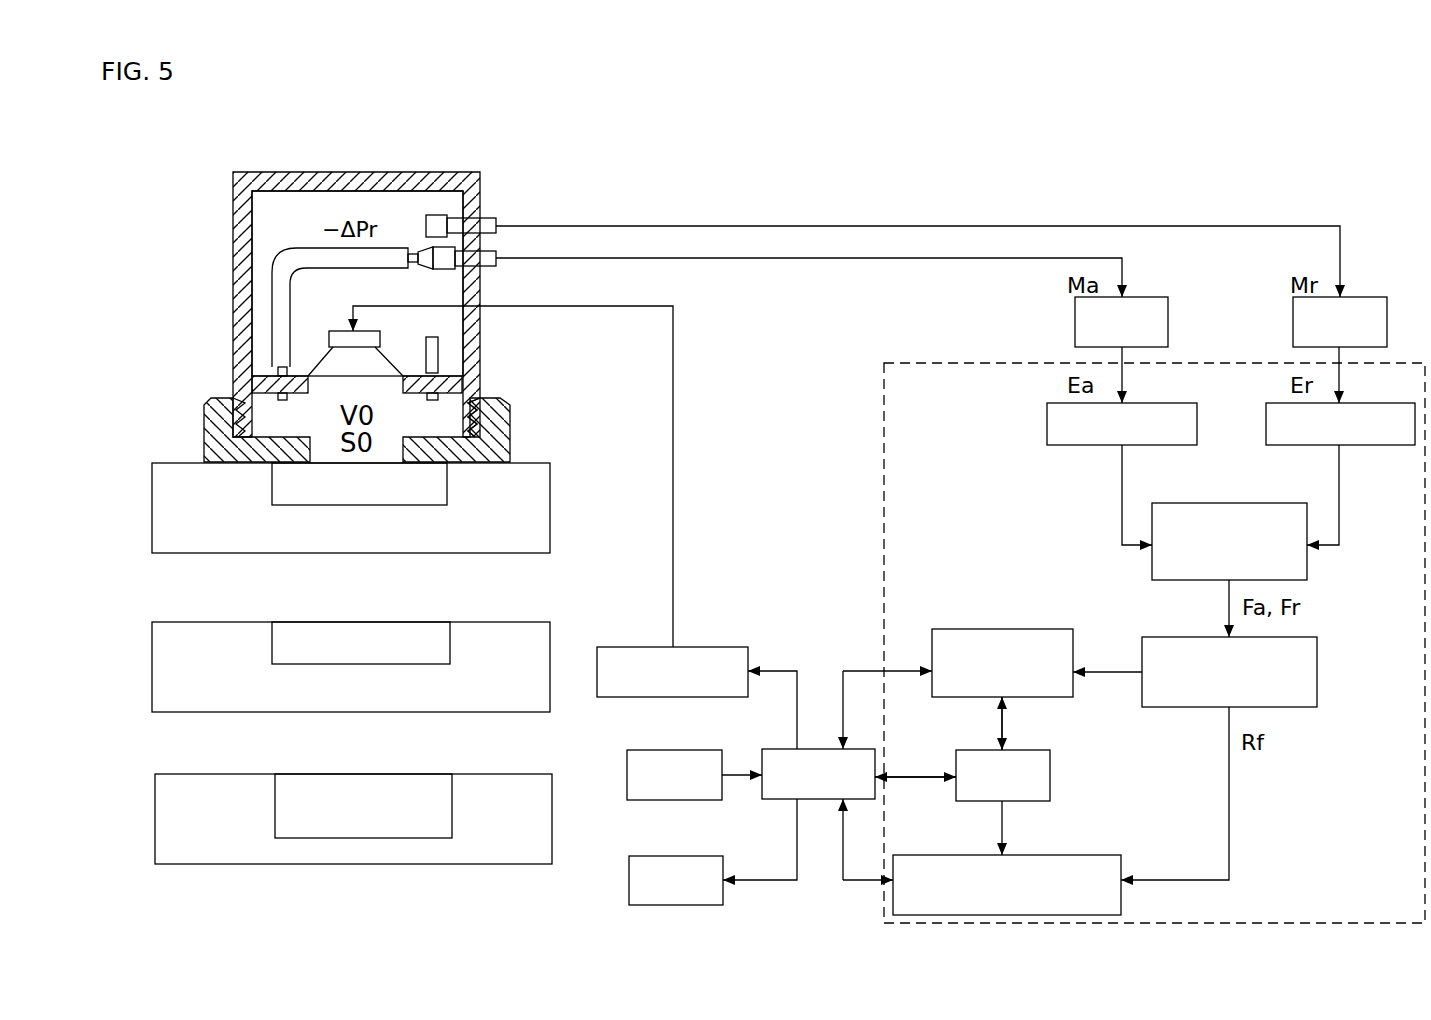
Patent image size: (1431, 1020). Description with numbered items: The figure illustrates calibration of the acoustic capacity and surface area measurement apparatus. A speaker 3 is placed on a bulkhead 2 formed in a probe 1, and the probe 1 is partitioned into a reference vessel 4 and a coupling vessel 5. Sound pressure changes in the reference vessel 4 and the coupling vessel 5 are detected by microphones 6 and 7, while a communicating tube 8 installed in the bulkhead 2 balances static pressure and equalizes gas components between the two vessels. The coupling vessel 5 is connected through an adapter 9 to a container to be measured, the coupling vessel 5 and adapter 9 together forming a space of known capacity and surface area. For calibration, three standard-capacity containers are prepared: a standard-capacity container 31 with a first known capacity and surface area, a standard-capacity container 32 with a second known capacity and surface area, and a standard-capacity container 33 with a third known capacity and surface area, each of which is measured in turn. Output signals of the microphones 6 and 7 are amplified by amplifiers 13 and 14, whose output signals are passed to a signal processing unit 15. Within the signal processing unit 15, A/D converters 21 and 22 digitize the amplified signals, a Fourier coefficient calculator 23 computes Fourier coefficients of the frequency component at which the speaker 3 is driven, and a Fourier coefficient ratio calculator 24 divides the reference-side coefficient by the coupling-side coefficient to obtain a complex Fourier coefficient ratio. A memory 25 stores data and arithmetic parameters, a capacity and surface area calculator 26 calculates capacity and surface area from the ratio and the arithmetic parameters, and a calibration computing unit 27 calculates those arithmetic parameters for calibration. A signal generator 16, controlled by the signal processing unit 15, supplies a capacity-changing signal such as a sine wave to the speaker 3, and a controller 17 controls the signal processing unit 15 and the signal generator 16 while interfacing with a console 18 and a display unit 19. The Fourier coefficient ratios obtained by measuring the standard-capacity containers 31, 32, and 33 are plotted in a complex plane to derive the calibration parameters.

The probe 1 is at (258, 172).
The bulkhead 2 is at (292, 380).
The speaker 3 is at (340, 334).
The reference vessel 4 is at (427, 200).
The coupling vessel 5 is at (268, 407).
The microphone 6 is at (490, 218).
The microphone 7 is at (500, 252).
The communicating tube 8 is at (438, 350).
The adapter 9 is at (493, 395).
The amplifier 13 is at (1357, 297).
The amplifier 14 is at (1137, 297).
The signal processing unit 15 is at (915, 363).
The signal generator 16 is at (710, 647).
The controller 17 is at (800, 749).
The console 18 is at (640, 750).
The display unit 19 is at (640, 856).
The A/D converter 21 is at (1355, 403).
The A/D converter 22 is at (1140, 403).
The Fourier coefficient calculator 23 is at (1183, 503).
The Fourier coefficient ratio calculator 24 is at (1150, 637).
The memory 25 is at (1030, 750).
The capacity and surface area calculator 26 is at (1068, 855).
The calibration computing unit 27 is at (955, 629).
The standard-capacity container 31 is at (518, 460).
The standard-capacity container 32 is at (460, 622).
The standard-capacity container 33 is at (470, 752).